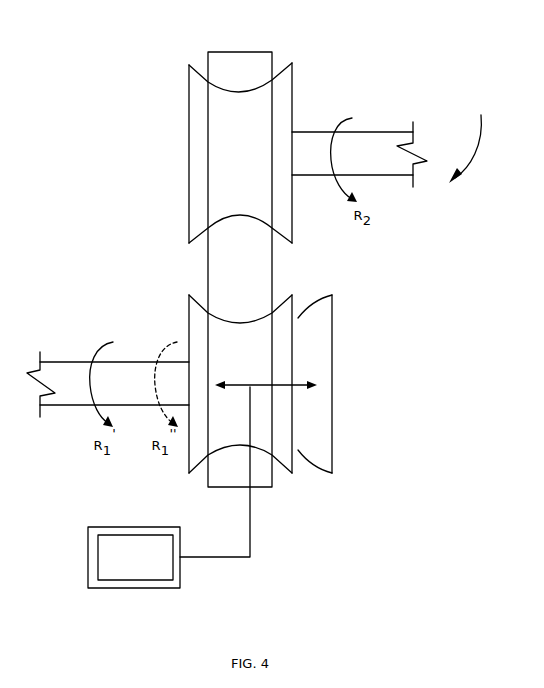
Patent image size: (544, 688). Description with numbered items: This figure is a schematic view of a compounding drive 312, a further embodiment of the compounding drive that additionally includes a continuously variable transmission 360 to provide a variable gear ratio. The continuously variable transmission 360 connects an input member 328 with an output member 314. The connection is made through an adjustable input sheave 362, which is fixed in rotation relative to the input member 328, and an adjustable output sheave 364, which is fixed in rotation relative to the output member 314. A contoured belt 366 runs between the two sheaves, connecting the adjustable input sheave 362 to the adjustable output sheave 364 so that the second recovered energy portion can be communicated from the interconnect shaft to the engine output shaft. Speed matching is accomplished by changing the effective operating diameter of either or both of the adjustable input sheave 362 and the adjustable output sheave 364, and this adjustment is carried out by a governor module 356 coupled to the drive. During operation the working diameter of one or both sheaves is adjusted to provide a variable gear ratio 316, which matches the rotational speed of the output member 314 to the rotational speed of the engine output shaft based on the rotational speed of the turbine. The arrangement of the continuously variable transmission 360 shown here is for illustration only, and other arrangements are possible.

The compounding drive 312 is at (53, 614).
The output member 314 is at (372, 142).
The variable gear ratio 316 is at (277, 380).
The input member 328 is at (67, 372).
The governor module 356 is at (169, 487).
The continuously variable transmission 360 is at (471, 139).
The adjustable input sheave 362 is at (284, 462).
The adjustable output sheave 364 is at (283, 95).
The contoured belt 366 is at (250, 276).